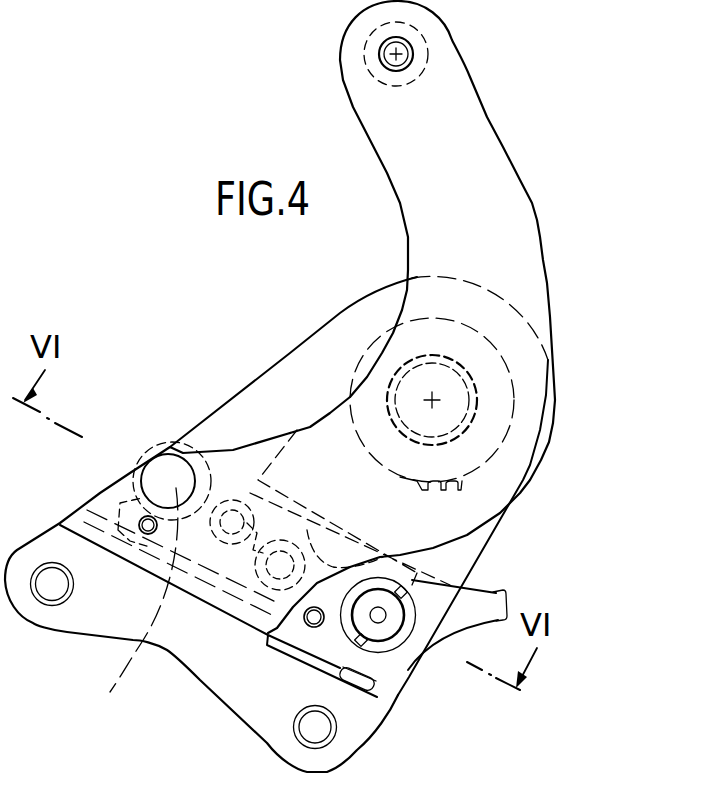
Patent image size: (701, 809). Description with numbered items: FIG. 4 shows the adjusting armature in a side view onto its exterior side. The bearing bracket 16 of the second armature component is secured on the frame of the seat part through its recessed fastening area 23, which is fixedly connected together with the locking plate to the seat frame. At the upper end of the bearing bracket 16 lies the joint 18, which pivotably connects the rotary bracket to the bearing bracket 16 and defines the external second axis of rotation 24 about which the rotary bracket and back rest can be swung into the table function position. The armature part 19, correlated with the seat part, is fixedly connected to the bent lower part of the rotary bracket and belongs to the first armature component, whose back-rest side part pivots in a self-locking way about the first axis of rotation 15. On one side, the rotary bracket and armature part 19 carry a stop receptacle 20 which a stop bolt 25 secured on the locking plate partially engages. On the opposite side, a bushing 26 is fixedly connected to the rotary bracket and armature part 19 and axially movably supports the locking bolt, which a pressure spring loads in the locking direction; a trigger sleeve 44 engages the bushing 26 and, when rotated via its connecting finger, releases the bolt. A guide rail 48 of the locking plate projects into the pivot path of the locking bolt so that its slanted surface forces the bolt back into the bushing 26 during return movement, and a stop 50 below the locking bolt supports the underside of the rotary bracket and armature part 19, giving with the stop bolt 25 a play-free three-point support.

The first axis of rotation 15 is at (432, 400).
The bearing bracket 16 is at (460, 204).
The joint 18 is at (362, 38).
The armature part 19 is at (300, 402).
The stop receptacle 20 is at (131, 599).
The recessed fastening area 23 is at (254, 674).
The second axis of rotation 24 is at (394, 54).
The stop bolt 25 is at (167, 480).
The bushing 26 is at (399, 624).
The trigger sleeve 44 is at (390, 646).
The guide rail 48 is at (510, 592).
The stop 50 is at (363, 684).